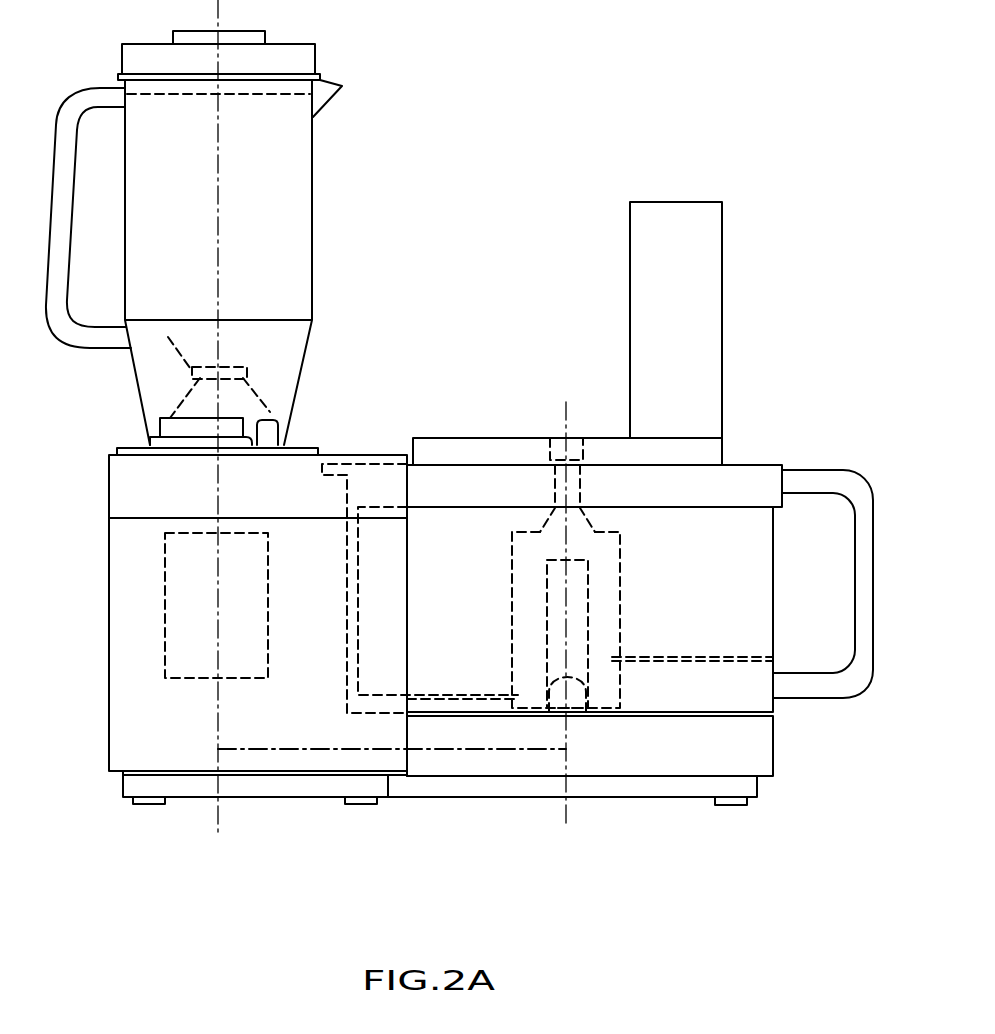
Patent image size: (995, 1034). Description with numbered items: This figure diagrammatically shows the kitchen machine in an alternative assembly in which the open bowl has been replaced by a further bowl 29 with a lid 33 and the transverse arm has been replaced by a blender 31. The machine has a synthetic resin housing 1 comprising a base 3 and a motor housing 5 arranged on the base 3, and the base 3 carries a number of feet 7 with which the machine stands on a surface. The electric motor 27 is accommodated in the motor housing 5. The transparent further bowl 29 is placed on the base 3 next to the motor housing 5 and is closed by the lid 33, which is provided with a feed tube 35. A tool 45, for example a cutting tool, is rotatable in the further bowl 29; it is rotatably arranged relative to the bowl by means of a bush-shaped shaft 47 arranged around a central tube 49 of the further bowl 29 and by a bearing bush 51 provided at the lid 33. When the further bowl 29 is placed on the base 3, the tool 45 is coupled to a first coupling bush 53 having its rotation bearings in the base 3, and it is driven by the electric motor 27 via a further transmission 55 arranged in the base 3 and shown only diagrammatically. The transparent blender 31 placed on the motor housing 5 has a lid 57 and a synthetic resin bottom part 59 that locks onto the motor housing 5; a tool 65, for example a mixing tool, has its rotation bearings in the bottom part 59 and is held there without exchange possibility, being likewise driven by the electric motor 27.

The housing 1 is at (103, 705).
The base 3 is at (680, 790).
The motor housing 5 is at (126, 620).
The feet 7 is at (152, 805).
The electric motor 27 is at (180, 638).
The further bowl 29 is at (758, 628).
The blender 31 is at (303, 216).
The lid 33 is at (746, 481).
The feed tube 35 is at (708, 285).
The tool 45 is at (685, 657).
The bush-shaped shaft 47 is at (608, 632).
The central tube 49 is at (553, 623).
The bearing bush 51 is at (557, 445).
The first coupling bush 53 is at (580, 712).
The further transmission 55 is at (467, 752).
The lid 57 is at (303, 59).
The bottom part 59 is at (200, 403).
The tool 65 is at (240, 370).